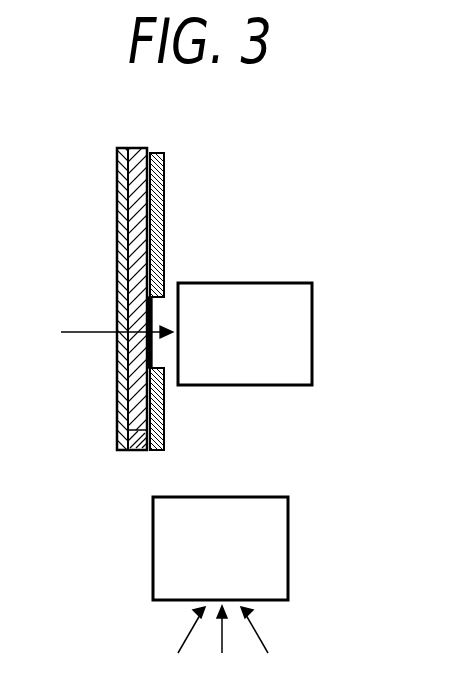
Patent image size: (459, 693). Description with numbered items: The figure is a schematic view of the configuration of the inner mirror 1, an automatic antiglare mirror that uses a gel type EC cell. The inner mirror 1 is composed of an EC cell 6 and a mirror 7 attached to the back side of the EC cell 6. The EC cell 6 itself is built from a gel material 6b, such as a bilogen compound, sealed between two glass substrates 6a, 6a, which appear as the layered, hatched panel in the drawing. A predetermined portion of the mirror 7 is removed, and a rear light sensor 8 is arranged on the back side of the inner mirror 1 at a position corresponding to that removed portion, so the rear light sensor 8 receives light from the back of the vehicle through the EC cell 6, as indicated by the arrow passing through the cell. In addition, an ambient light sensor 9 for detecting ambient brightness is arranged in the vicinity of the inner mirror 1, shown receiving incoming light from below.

The inner mirror 1 is at (145, 284).
The EC cell 6 is at (145, 284).
The glass substrates 6a is at (117, 430).
The gel material 6b is at (160, 396).
The mirror 7 is at (165, 218).
The rear light sensor 8 is at (313, 298).
The ambient light sensor 9 is at (290, 520).